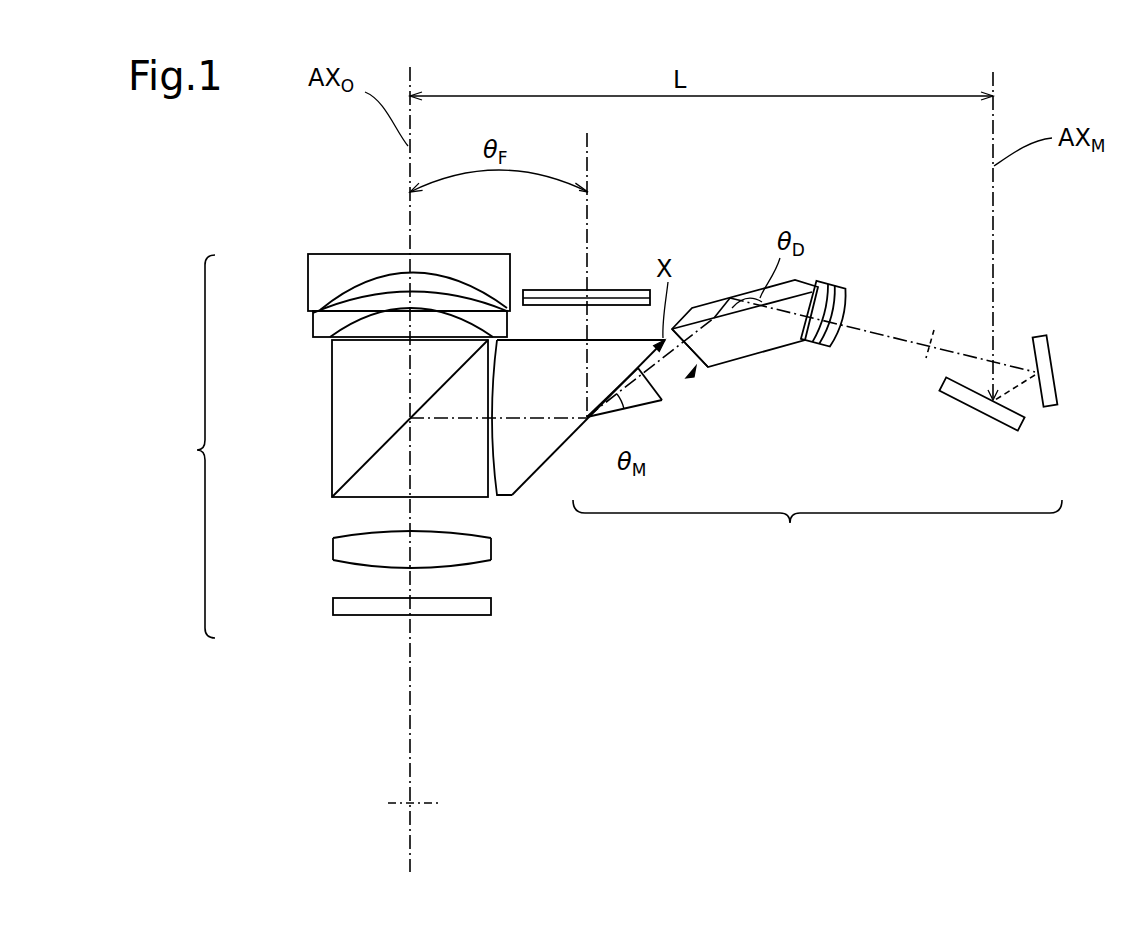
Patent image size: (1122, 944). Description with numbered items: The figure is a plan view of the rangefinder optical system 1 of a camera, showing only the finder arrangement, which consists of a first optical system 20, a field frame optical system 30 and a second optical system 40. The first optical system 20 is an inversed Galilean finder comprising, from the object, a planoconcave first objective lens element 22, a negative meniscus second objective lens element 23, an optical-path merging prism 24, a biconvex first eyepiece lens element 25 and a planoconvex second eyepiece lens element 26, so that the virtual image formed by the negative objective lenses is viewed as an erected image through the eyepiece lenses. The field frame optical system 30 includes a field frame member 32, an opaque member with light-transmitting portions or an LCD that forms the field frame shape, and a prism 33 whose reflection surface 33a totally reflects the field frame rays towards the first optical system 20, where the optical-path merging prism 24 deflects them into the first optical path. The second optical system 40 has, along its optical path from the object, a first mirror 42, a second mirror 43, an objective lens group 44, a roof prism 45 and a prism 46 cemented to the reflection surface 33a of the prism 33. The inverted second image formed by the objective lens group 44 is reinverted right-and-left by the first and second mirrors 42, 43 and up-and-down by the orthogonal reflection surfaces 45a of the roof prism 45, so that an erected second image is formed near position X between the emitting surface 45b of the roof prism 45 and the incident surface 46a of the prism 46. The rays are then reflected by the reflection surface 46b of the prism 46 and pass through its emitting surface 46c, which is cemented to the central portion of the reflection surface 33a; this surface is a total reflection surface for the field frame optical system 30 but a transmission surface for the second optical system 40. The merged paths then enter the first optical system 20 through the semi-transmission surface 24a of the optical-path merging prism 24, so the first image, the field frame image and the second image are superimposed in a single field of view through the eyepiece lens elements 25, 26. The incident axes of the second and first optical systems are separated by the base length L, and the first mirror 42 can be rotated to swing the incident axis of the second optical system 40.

The rangefinder optical system 1 is at (870, 92).
The first optical system 20 is at (188, 446).
The first objective lens element 22 is at (308, 283).
The second objective lens element 23 is at (313, 325).
The optical-path merging prism 24 is at (371, 418).
The semi-transmission surface 24a is at (365, 465).
The first eyepiece lens element 25 is at (333, 548).
The second eyepiece lens element 26 is at (333, 607).
The field frame optical system 30 is at (623, 272).
The field frame member 32 is at (553, 290).
The prism 33 is at (578, 447).
The reflection surface 33a is at (543, 466).
The second optical system 40 is at (817, 530).
The first mirror 42 is at (972, 408).
The second mirror 43 is at (1058, 384).
The objective lens group 44 is at (845, 298).
The roof prism 45 is at (745, 334).
The orthogonal reflection surfaces 45a is at (716, 318).
The emitting surface 45b is at (702, 358).
The prism 46 is at (652, 414).
The incident surface 46a is at (655, 388).
The reflection surface 46b is at (643, 405).
The emitting surface 46c is at (607, 395).